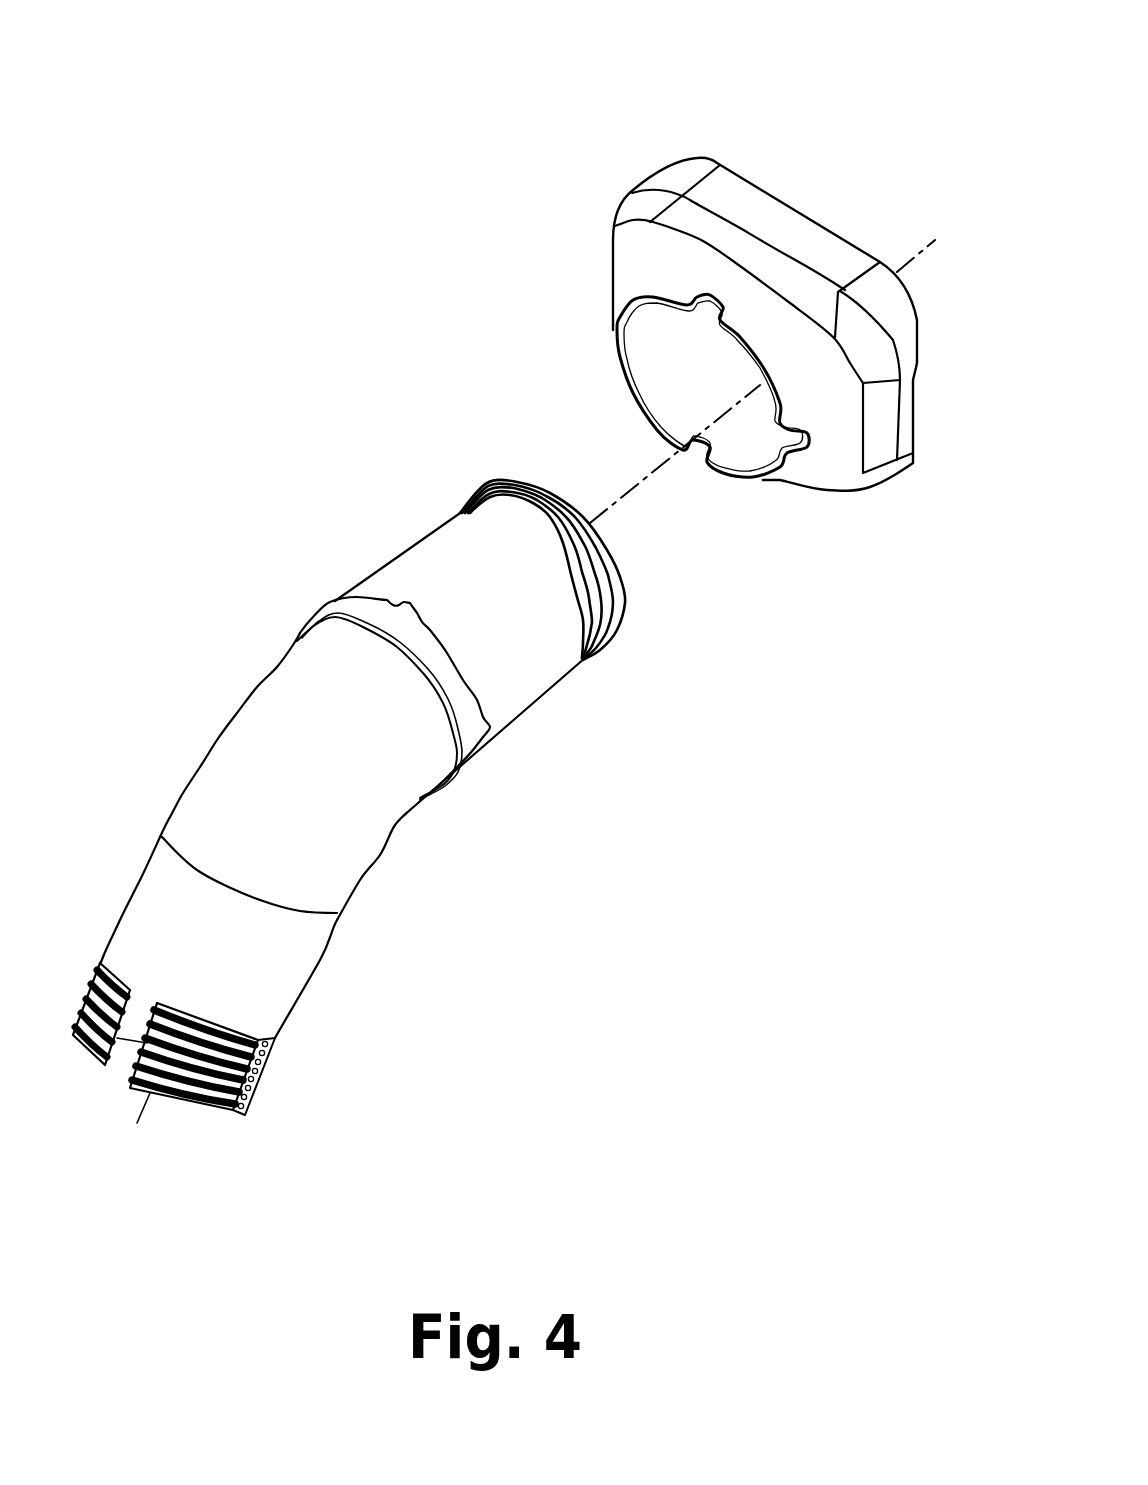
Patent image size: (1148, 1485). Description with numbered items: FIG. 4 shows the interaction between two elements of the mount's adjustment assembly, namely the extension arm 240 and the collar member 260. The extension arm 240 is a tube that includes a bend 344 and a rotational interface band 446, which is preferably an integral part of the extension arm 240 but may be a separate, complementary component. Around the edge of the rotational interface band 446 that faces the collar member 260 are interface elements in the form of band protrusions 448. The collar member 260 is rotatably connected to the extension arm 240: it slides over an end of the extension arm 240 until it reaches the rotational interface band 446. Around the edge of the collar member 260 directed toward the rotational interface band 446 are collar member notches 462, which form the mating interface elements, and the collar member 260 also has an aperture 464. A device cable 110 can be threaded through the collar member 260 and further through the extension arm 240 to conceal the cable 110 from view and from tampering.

The device cable 110 is at (627, 495).
The extension arm 240 is at (223, 980).
The collar member 260 is at (650, 202).
The bend 344 is at (375, 822).
The rotational interface band 446 is at (358, 610).
The band protrusions 448 is at (397, 604).
The collar member notches 462 is at (617, 338).
The aperture 464 is at (702, 380).